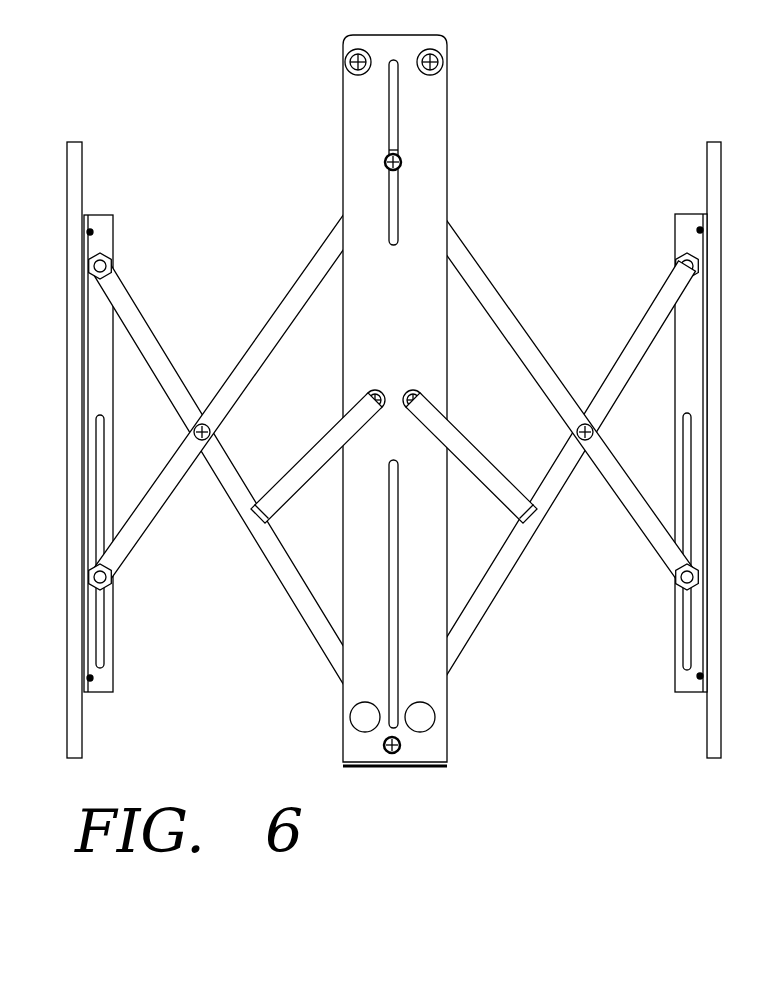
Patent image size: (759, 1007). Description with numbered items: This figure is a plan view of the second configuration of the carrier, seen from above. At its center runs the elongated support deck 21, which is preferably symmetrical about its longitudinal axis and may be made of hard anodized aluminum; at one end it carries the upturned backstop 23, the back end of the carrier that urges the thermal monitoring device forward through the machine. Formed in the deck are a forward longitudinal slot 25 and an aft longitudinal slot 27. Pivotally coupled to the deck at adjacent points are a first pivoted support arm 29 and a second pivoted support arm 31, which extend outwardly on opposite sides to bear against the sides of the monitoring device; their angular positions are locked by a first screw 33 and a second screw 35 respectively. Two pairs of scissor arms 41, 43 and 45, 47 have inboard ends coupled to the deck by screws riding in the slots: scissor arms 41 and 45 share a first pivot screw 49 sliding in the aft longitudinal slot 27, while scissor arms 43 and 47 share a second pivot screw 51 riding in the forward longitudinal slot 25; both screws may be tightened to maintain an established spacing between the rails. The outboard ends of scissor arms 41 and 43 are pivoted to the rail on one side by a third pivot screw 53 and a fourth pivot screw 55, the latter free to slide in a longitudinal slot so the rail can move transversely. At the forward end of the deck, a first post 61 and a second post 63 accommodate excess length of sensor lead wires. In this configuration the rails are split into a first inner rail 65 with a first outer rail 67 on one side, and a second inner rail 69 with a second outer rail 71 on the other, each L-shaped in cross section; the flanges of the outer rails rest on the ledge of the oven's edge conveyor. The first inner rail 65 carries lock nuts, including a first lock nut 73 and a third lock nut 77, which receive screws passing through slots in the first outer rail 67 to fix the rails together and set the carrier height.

The elongated support deck 21 is at (342, 190).
The upturned backstop 23 is at (427, 766).
The forward longitudinal slot 25 is at (393, 185).
The aft longitudinal slot 27 is at (393, 668).
The first pivoted support arm 29 is at (285, 480).
The second pivoted support arm 31 is at (500, 478).
The first screw 33 is at (366, 400).
The second screw 35 is at (422, 396).
The scissor arm 41 is at (271, 566).
The scissor arm 43 is at (262, 328).
The scissor arm 45 is at (520, 566).
The scissor arm 47 is at (545, 350).
The first pivot screw 49 is at (402, 745).
The second pivot screw 51 is at (402, 162).
The third pivot screw 53 is at (114, 266).
The fourth pivot screw 55 is at (113, 584).
The first post 61 is at (345, 62).
The second post 63 is at (444, 60).
The first inner rail 65 is at (115, 225).
The first outer rail 67 is at (73, 140).
The second inner rail 69 is at (675, 245).
The second outer rail 71 is at (707, 158).
The first lock nut 73 is at (95, 690).
The third lock nut 77 is at (92, 229).